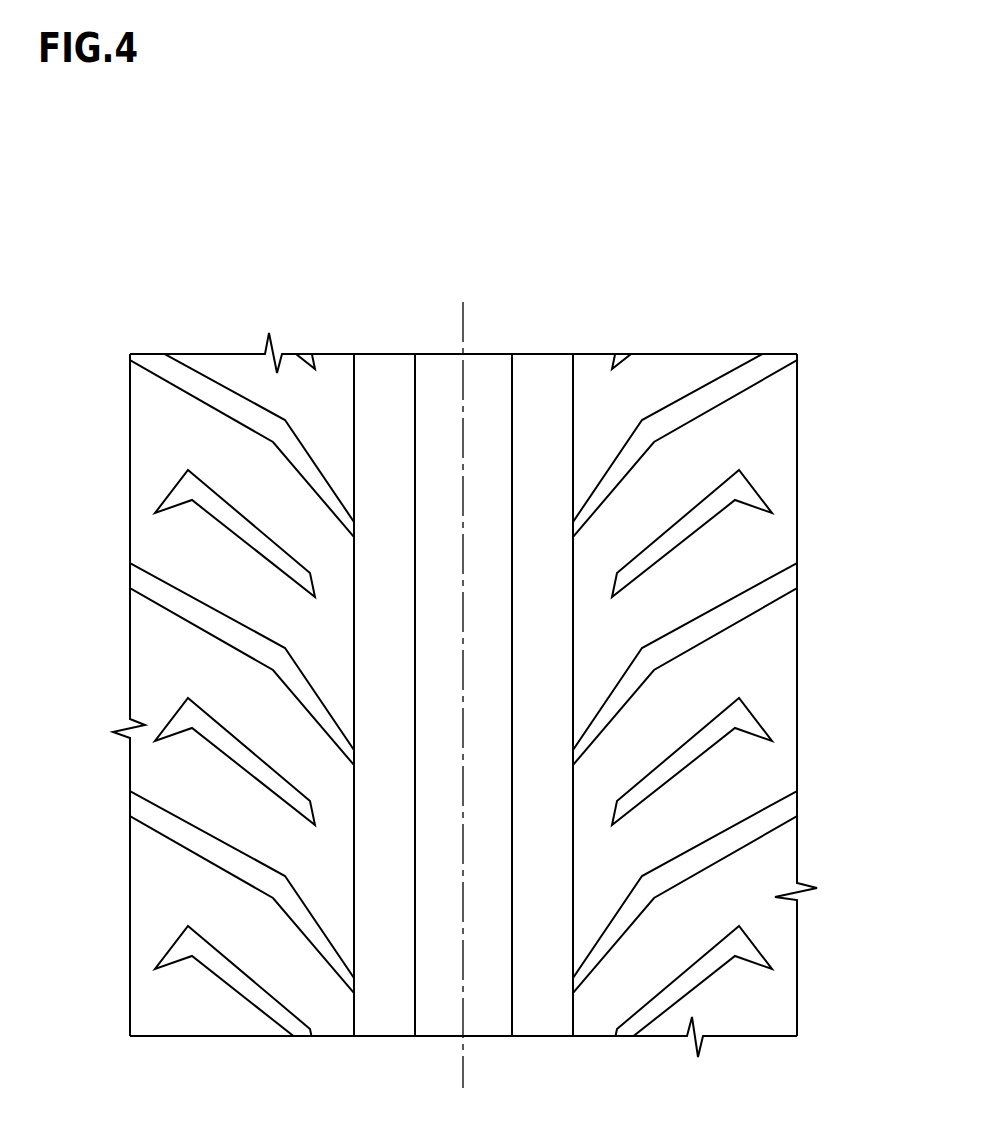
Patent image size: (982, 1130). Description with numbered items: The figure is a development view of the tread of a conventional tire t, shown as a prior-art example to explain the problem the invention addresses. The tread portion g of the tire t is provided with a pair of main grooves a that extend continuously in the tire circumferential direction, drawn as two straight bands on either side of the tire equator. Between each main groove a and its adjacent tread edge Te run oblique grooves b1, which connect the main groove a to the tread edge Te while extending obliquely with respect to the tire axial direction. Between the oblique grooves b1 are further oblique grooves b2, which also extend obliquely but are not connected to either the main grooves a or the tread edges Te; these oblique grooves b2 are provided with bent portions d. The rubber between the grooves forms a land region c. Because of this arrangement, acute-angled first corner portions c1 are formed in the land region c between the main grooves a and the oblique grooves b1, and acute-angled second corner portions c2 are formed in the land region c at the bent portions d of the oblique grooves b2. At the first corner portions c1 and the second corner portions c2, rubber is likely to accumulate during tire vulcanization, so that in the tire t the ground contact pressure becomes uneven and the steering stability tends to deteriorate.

The tire t is at (779, 282).
The tread edge Te is at (128, 382).
The main groove a is at (383, 397).
The oblique groove b1 is at (177, 600).
The oblique groove b2 is at (172, 502).
The land region c is at (653, 382).
The tread portion g is at (688, 327).
The bent portion d is at (187, 483).
The first corner portion c1 is at (345, 708).
The second corner portion c2 is at (192, 505).